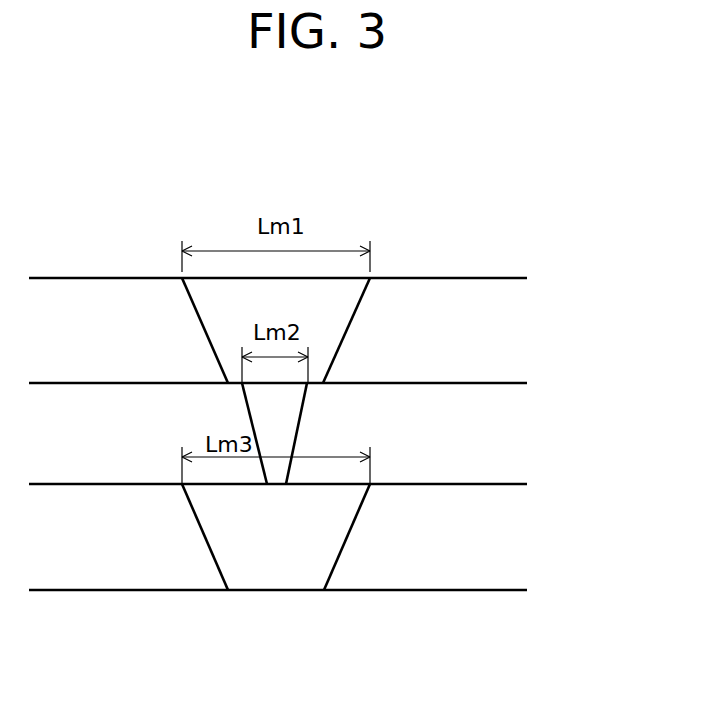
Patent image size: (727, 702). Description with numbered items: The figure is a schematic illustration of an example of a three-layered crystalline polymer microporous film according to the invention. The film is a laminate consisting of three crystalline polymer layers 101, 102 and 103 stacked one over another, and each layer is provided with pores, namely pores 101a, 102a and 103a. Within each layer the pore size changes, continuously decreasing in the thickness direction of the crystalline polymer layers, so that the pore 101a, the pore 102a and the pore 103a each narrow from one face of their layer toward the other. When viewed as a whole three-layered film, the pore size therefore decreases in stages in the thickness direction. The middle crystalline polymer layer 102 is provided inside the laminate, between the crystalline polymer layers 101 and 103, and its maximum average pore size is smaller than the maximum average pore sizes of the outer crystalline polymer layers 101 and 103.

The crystalline polymer layer 101 is at (512, 337).
The crystalline polymer layer 102 is at (512, 438).
The crystalline polymer layer 103 is at (513, 544).
The pore 101a is at (185, 326).
The pore 102a is at (302, 434).
The pore 103a is at (200, 555).